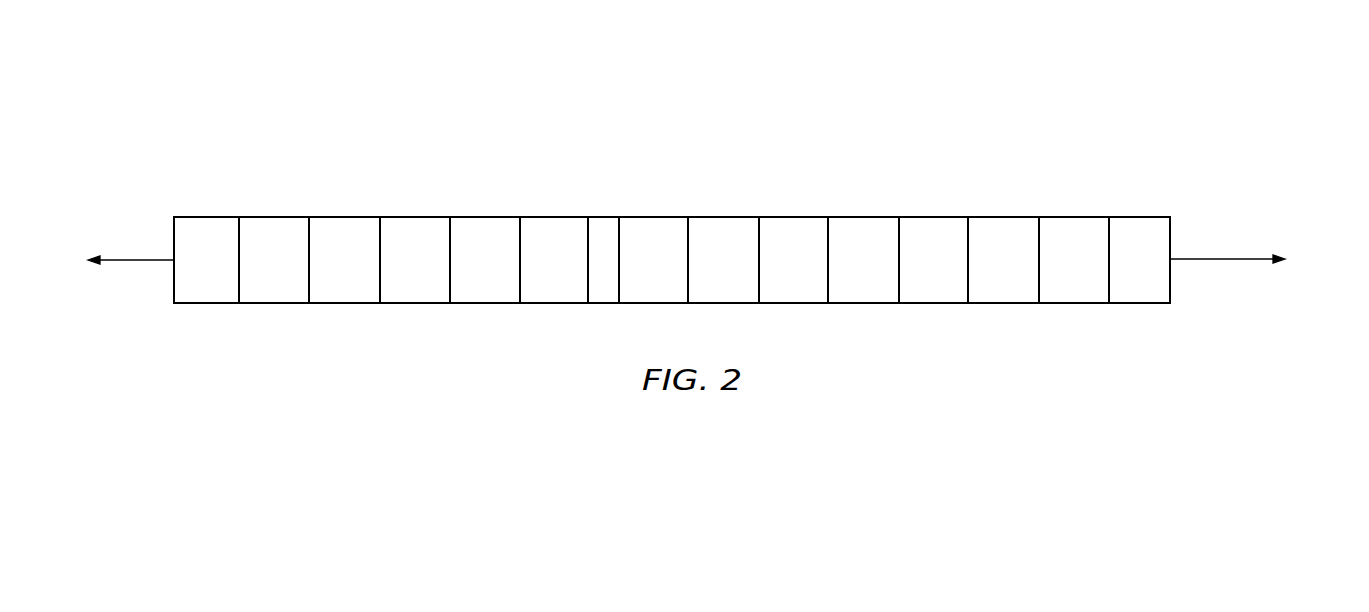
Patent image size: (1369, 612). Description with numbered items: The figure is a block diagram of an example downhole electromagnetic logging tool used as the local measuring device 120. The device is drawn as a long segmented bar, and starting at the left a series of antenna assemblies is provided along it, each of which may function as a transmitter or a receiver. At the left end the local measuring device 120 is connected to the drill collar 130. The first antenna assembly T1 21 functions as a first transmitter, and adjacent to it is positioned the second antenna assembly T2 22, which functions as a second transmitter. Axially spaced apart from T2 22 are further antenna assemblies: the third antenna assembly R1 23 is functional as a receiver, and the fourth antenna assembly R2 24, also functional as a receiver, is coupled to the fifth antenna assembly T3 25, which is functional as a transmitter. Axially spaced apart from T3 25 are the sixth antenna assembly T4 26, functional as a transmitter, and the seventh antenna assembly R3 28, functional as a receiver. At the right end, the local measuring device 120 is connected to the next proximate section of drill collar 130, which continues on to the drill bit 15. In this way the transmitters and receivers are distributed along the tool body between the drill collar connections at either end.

The local measuring device 120 is at (1182, 118).
The first antenna assembly T1 21 is at (266, 216).
The second antenna assembly T2 22 is at (408, 216).
The third antenna assembly R1 23 is at (541, 216).
The fourth antenna assembly R2 24 is at (643, 216).
The fifth antenna assembly T3 25 is at (785, 216).
The sixth antenna assembly T4 26 is at (923, 216).
The seventh antenna assembly R3 28 is at (1059, 216).
The drill collar 130 is at (698, 260).
The drill bit 15 is at (1261, 260).